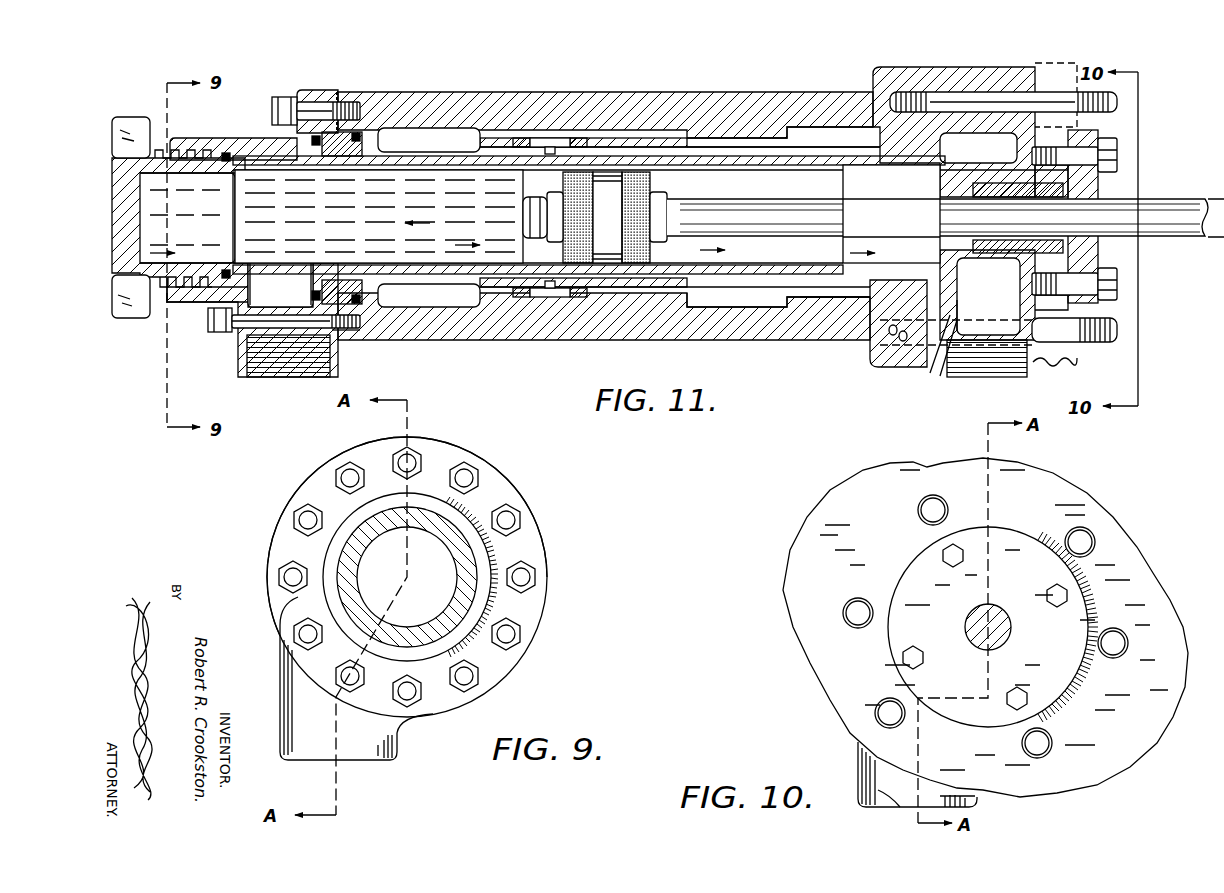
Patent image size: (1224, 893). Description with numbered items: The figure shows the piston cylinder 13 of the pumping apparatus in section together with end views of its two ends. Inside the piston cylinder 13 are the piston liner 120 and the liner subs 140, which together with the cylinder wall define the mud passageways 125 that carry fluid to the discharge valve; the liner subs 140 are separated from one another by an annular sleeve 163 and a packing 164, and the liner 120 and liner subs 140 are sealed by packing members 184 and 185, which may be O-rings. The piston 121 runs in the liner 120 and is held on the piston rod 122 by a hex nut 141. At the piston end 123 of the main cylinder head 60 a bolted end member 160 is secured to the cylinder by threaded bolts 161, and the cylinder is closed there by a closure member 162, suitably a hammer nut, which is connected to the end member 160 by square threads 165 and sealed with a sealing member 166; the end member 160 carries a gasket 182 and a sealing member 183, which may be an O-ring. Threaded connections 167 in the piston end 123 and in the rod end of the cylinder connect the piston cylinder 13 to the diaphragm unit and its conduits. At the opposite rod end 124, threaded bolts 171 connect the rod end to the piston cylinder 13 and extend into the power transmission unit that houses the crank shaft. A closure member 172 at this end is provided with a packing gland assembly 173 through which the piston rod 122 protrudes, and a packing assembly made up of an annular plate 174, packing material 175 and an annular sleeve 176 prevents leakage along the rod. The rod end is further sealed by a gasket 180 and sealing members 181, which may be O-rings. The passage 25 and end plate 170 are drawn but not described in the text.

In FIG. 11, the piston cylinder 13 is at (700, 110).
In FIG. 11, the fluid passage 25 is at (833, 127).
In FIG. 11, the main cylinder head 60 is at (220, 289).
In FIG. 9, the main cylinder head 60 is at (525, 603).
In FIG. 11, the piston liner 120 is at (757, 158).
In FIG. 11, the piston 121 is at (640, 272).
In FIG. 11, the piston rod 122 is at (1177, 210).
In FIG. 10, the piston rod 122 is at (978, 637).
In FIG. 11, the piston end 123 is at (258, 148).
In FIG. 9, the piston end 123 is at (487, 470).
In FIG. 11, the rod end 124 is at (1117, 140).
In FIG. 11, the mud passageway 125 is at (425, 128).
In FIG. 11, the liner sub 140 is at (476, 138).
In FIG. 11, the hex nut 141 is at (520, 240).
In FIG. 11, the bolted end member 160 is at (318, 92).
In FIG. 9, the bolted end member 160 is at (498, 492).
In FIG. 11, the threaded bolt 161 is at (272, 98).
In FIG. 9, the threaded bolt 161 is at (307, 520).
In FIG. 11, the closure member 162 is at (140, 118).
In FIG. 9, the closure member 162 is at (347, 557).
In FIG. 11, the annular sleeve 163 is at (553, 137).
In FIG. 11, the packing 164 is at (523, 297).
In FIG. 11, the square threads 165 is at (198, 147).
In FIG. 11, the sealing member 166 is at (228, 258).
In FIG. 11, the threaded connection 167 is at (262, 364).
In FIG. 10, the end plate 170 is at (1103, 517).
In FIG. 11, the threaded bolt 171 is at (1117, 101).
In FIG. 10, the threaded bolt 171 is at (1087, 542).
In FIG. 11, the closure member 172 is at (990, 364).
In FIG. 11, the packing gland assembly 173 is at (1098, 250).
In FIG. 10, the packing gland assembly 173 is at (920, 573).
In FIG. 11, the annular plate 174 is at (1065, 192).
In FIG. 11, the packing material 175 is at (1017, 258).
In FIG. 11, the annular sleeve 176 is at (965, 245).
In FIG. 11, the gasket 180 is at (930, 368).
In FIG. 11, the sealing member 181 is at (899, 341).
In FIG. 11, the gasket 182 is at (342, 350).
In FIG. 11, the sealing member 183 is at (282, 290).
In FIG. 11, the packing member 184 is at (360, 133).
In FIG. 11, the packing member 185 is at (318, 290).